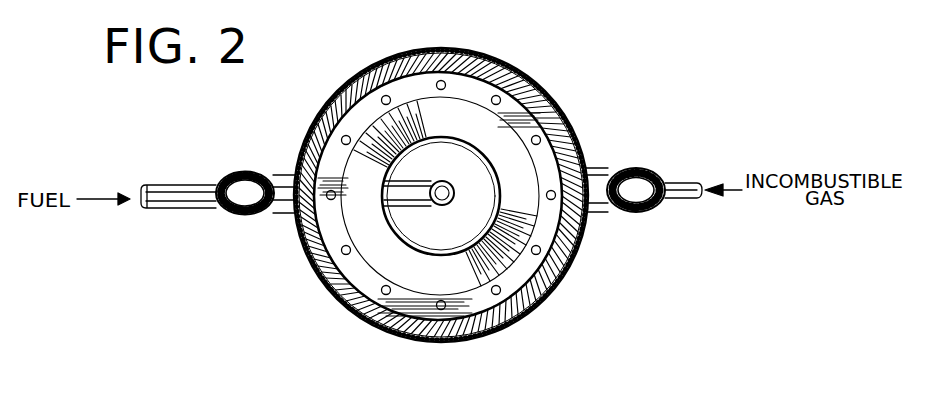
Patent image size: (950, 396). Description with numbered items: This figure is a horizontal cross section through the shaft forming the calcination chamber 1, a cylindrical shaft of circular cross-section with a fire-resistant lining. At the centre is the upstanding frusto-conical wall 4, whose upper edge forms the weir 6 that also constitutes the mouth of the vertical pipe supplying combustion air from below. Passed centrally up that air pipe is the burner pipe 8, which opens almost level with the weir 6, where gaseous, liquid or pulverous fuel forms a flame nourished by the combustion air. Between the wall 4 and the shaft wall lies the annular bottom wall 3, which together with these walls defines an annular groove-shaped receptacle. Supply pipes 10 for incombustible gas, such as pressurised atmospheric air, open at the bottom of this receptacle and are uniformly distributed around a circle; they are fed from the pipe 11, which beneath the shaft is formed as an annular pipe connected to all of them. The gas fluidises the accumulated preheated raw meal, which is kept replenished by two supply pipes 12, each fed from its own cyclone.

The calcination chamber 1 is at (545, 73).
The annular bottom wall 3 is at (318, 238).
The central upstanding frusto-conical wall 4 is at (421, 117).
The weir 6 is at (458, 257).
The burner pipe 8 is at (428, 184).
The supply pipes for incombustible gas 10 is at (340, 140).
The pipe for incombustible gas 11 is at (680, 199).
The supply pipes for raw meal 12 is at (238, 215).